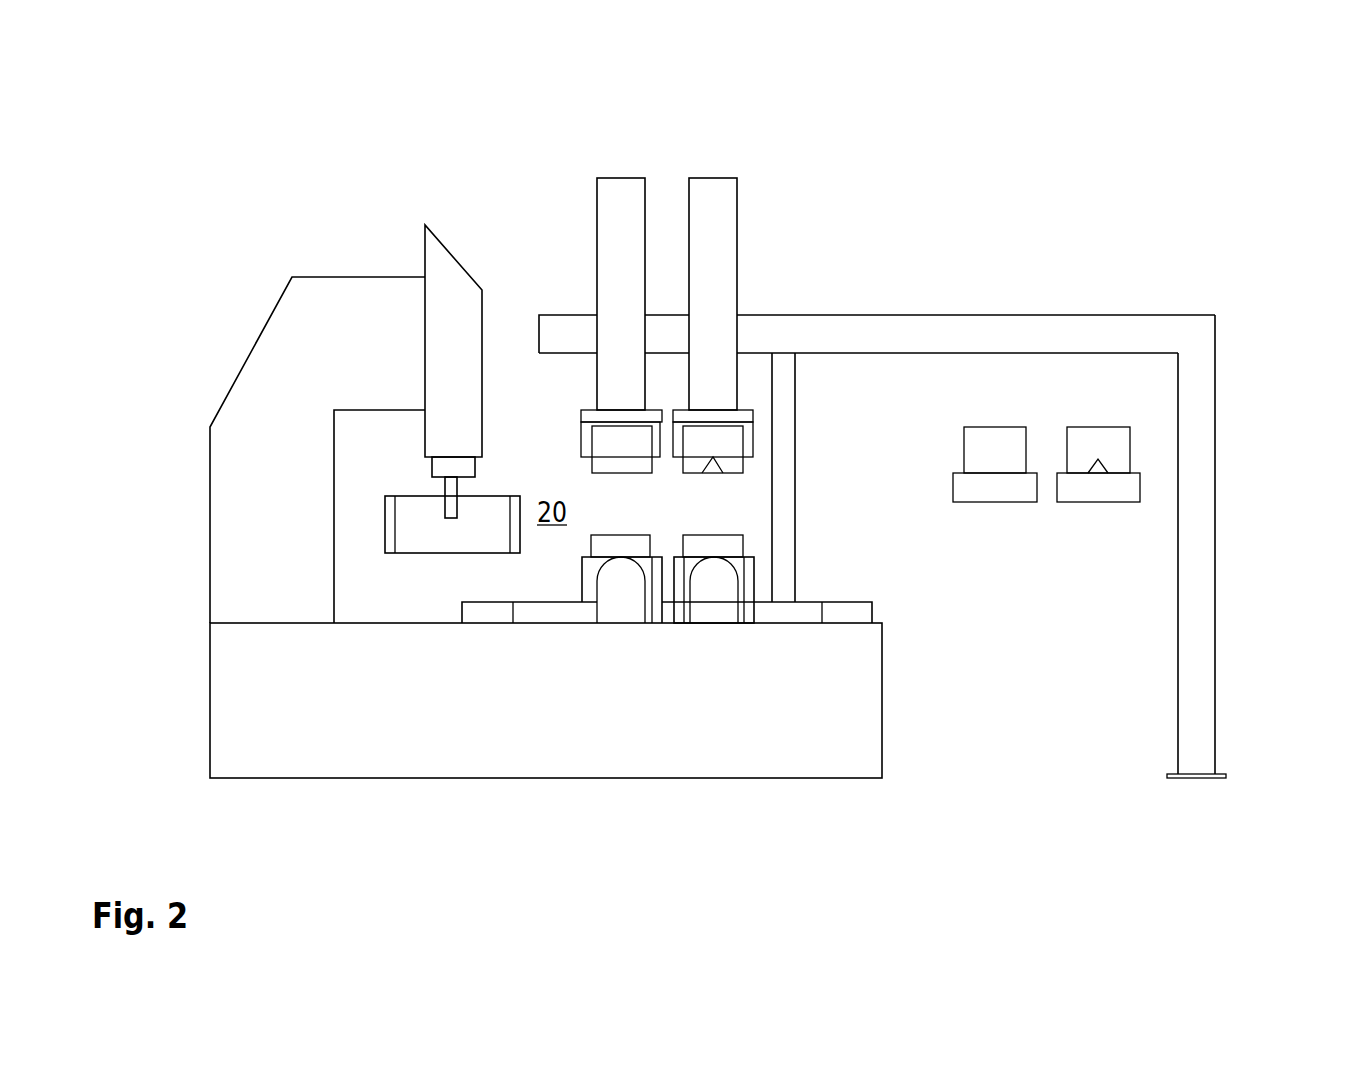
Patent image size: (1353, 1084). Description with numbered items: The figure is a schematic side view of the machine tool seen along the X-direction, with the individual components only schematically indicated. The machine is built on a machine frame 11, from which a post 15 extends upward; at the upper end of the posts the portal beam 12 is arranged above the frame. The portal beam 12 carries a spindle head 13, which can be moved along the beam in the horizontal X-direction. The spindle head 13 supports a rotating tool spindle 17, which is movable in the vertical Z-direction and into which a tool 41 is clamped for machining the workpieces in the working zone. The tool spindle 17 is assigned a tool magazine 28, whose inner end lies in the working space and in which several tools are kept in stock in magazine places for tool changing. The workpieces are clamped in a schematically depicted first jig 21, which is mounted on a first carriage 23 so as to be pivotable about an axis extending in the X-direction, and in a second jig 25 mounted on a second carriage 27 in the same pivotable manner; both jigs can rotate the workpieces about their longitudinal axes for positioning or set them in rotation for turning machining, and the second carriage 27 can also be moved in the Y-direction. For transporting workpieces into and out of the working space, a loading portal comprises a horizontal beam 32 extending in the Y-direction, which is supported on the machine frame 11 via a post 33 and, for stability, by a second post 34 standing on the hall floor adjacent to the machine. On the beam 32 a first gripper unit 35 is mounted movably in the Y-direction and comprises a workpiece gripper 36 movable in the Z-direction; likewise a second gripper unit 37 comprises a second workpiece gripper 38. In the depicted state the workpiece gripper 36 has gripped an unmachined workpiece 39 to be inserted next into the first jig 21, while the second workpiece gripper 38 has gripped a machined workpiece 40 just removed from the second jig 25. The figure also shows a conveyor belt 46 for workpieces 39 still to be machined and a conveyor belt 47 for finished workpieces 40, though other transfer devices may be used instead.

The machine frame 11 is at (298, 725).
The portal beam 12 is at (312, 318).
The spindle head 13 is at (445, 323).
The post 15 is at (257, 553).
The tool spindle 17 is at (428, 468).
The first jig 21 is at (612, 547).
The first carriage 23 is at (553, 605).
The second jig 25 is at (712, 548).
The second carriage 27 is at (762, 605).
The tool magazine 28 is at (433, 543).
The horizontal beam 32 is at (1012, 330).
The post 33 is at (782, 571).
The second post 34 is at (1200, 523).
The first gripper unit 35 is at (623, 212).
The workpiece gripper 36 is at (588, 420).
The second gripper unit 37 is at (717, 235).
The second workpiece gripper 38 is at (750, 415).
The unmachined workpiece 39 is at (610, 460).
The machined workpiece 40 is at (728, 441).
The tool 41 is at (447, 508).
The conveyor belt 46 is at (1013, 495).
The conveyor belt 47 is at (1107, 495).